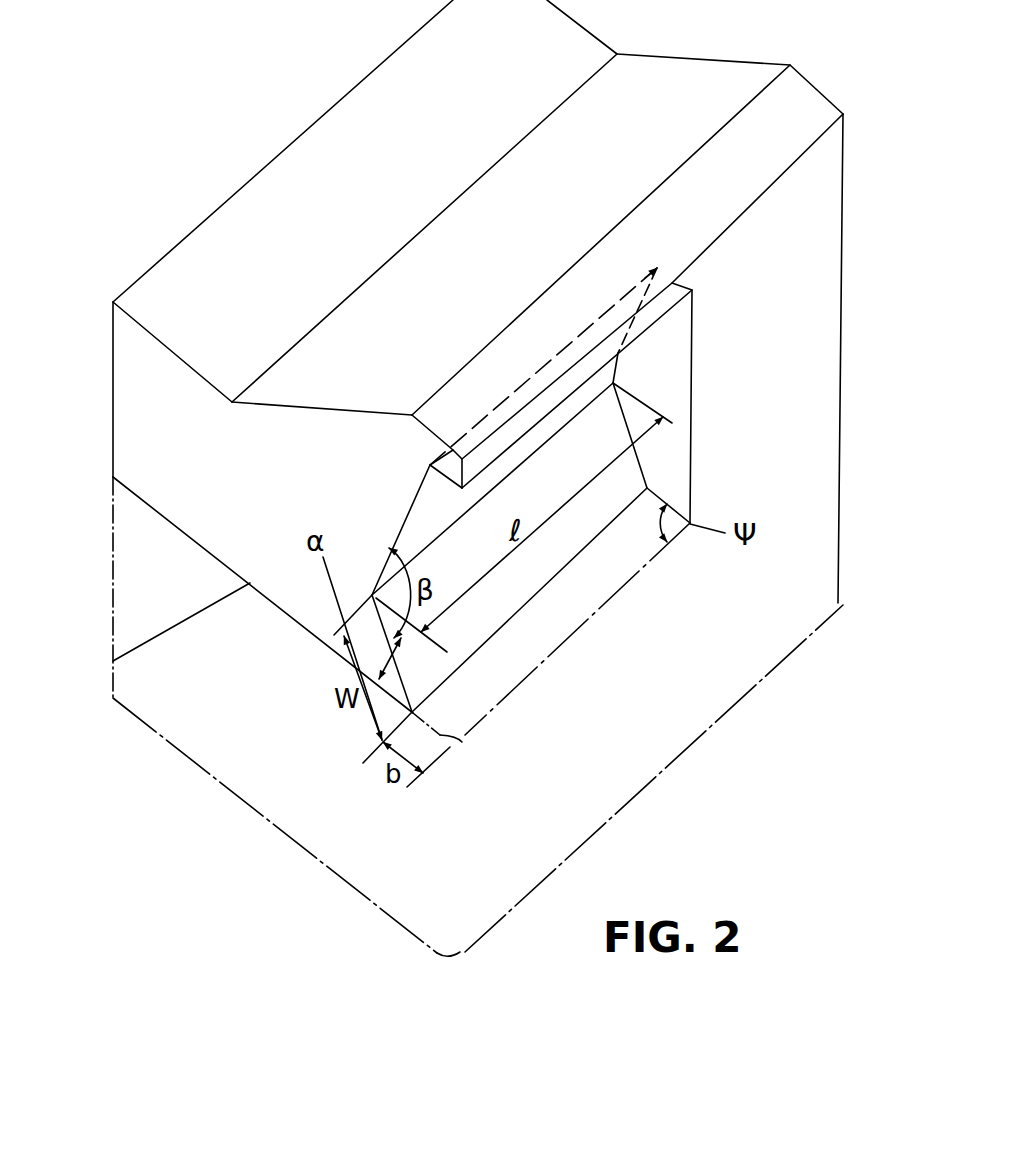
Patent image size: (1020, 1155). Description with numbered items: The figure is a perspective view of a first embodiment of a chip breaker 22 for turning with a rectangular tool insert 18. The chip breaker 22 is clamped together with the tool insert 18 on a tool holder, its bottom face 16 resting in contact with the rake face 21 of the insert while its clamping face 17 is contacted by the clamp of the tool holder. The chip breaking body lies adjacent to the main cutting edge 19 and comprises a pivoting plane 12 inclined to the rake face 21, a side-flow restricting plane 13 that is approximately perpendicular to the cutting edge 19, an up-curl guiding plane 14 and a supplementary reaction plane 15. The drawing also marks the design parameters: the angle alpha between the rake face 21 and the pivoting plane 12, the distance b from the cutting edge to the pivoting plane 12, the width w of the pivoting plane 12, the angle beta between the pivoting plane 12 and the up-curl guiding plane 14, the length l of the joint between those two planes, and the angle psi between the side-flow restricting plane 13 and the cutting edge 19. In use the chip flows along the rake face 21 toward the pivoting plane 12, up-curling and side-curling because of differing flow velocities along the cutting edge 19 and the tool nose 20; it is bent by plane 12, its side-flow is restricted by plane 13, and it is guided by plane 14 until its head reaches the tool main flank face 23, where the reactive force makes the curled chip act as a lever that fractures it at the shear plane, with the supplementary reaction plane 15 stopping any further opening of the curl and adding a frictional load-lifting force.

The pivoting plane 12 is at (572, 527).
The side-flow restricting plane 13 is at (667, 397).
The up-curl guiding plane 14 is at (545, 432).
The supplementary reaction plane 15 is at (658, 321).
The bottom face 16 is at (113, 661).
The clamping face 17 is at (383, 115).
The tool insert 18 is at (150, 578).
The main cutting edge 19 is at (558, 650).
The tool nose 20 is at (462, 742).
The rake face 21 is at (573, 603).
The chip breaker 22 is at (145, 439).
The tool main flank face 23 is at (658, 590).